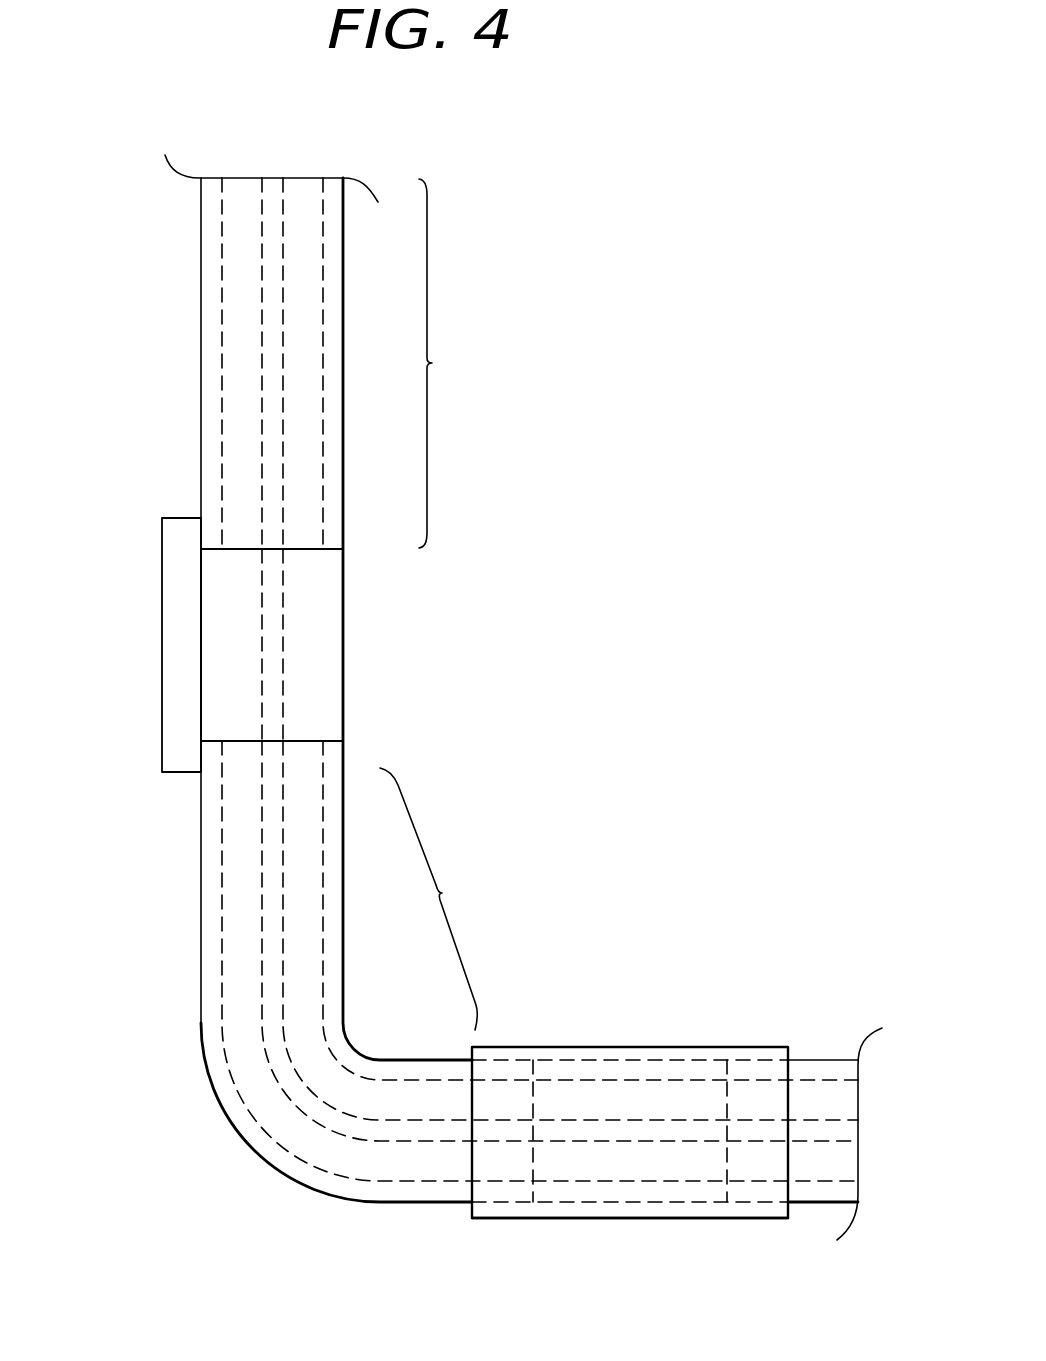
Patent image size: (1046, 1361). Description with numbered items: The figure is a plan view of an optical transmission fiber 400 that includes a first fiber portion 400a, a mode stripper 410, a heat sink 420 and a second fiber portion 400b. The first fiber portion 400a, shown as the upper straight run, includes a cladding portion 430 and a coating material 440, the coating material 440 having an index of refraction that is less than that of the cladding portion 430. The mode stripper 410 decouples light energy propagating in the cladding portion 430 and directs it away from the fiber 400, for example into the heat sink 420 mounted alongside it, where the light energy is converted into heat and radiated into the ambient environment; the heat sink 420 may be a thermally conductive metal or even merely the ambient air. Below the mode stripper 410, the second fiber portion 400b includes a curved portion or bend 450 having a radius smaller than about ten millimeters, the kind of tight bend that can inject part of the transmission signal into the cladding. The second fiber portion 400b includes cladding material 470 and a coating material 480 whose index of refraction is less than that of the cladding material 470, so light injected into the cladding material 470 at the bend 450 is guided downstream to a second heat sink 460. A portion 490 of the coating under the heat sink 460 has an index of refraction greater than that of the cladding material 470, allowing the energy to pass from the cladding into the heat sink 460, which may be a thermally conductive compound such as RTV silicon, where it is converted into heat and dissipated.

The optical transmission fiber 400 is at (660, 175).
The first fiber portion 400a is at (432, 363).
The second fiber portion 400b is at (442, 893).
The mode stripper 410 is at (345, 633).
The heat sink 420 is at (160, 643).
The cladding portion 430 is at (220, 220).
The coating material 440 is at (200, 418).
The bend 450 is at (225, 1164).
The second heat sink 460 is at (627, 1218).
The cladding material 470 is at (220, 815).
The coating material 480 is at (200, 1008).
The portion of the coating 490 is at (653, 1047).